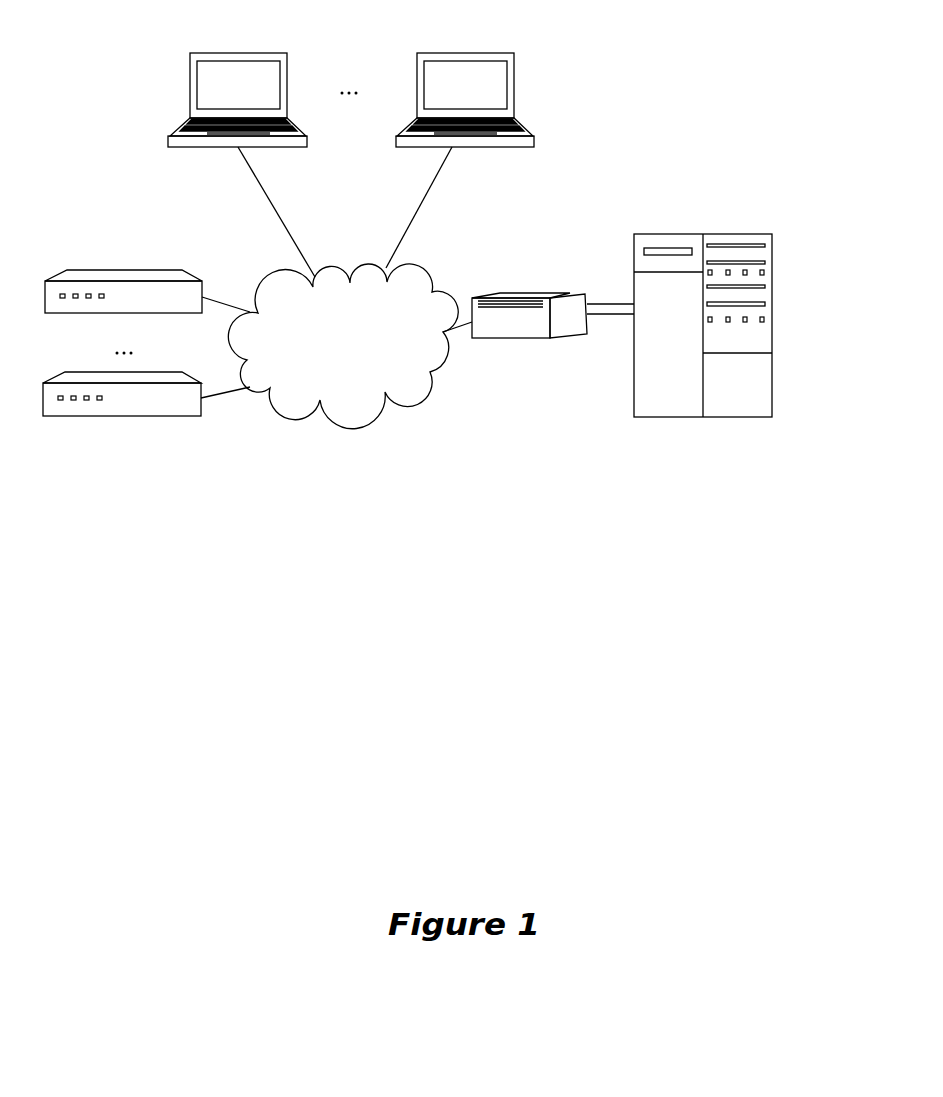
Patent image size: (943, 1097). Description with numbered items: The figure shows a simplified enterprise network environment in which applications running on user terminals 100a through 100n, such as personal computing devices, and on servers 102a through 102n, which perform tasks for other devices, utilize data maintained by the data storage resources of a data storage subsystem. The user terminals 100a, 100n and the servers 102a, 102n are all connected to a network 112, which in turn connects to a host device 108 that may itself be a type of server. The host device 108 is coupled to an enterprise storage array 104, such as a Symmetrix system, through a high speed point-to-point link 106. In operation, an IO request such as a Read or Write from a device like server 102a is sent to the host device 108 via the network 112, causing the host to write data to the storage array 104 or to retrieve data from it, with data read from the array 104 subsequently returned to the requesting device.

The user terminal 100a is at (245, 53).
The user terminal 100n is at (465, 53).
The server 102a is at (157, 270).
The server 102n is at (120, 372).
The enterprise storage array 104 is at (773, 251).
The high speed point-to-point link 106 is at (604, 292).
The host device 108 is at (550, 293).
The network 112 is at (367, 349).